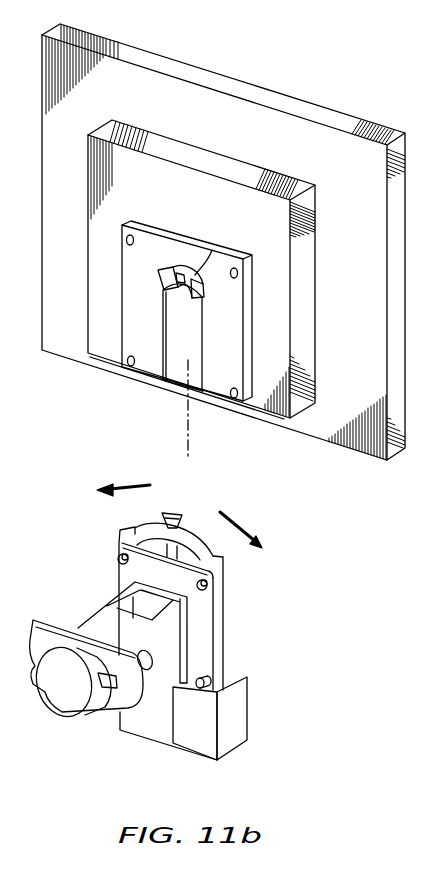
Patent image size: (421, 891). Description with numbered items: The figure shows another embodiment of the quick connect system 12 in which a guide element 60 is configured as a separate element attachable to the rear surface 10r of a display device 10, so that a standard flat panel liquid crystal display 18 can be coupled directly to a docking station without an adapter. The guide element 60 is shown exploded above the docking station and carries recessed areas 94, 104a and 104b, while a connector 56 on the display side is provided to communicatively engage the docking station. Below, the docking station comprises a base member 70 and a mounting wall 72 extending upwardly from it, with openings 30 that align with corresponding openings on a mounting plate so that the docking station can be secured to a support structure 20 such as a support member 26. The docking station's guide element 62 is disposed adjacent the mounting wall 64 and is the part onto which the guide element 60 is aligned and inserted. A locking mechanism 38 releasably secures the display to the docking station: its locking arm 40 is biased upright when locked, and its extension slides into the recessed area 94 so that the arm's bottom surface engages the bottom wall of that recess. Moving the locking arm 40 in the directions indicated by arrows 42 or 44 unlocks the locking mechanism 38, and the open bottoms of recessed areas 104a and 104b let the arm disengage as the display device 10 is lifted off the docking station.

The display device 10 is at (217, 405).
The flat panel liquid crystal display 18 is at (305, 116).
The rear surface 10r is at (215, 192).
The guide element 60 is at (272, 333).
The mounting wall 64 is at (176, 362).
The connector 56 is at (178, 392).
The recessed area 94 is at (163, 266).
The recessed area 104a is at (160, 270).
The recessed area 104b is at (203, 282).
The locking mechanism 38 is at (205, 495).
The arrow 42 is at (130, 486).
The arrow 44 is at (238, 528).
The quick connect system 12 is at (293, 613).
The guide element 62 is at (238, 578).
The mounting wall 72 is at (223, 632).
The locking arm 40 is at (173, 512).
The openings 30 is at (119, 562).
The support member 26 is at (163, 678).
The base member 70 is at (236, 707).
The support structure 20 is at (120, 703).